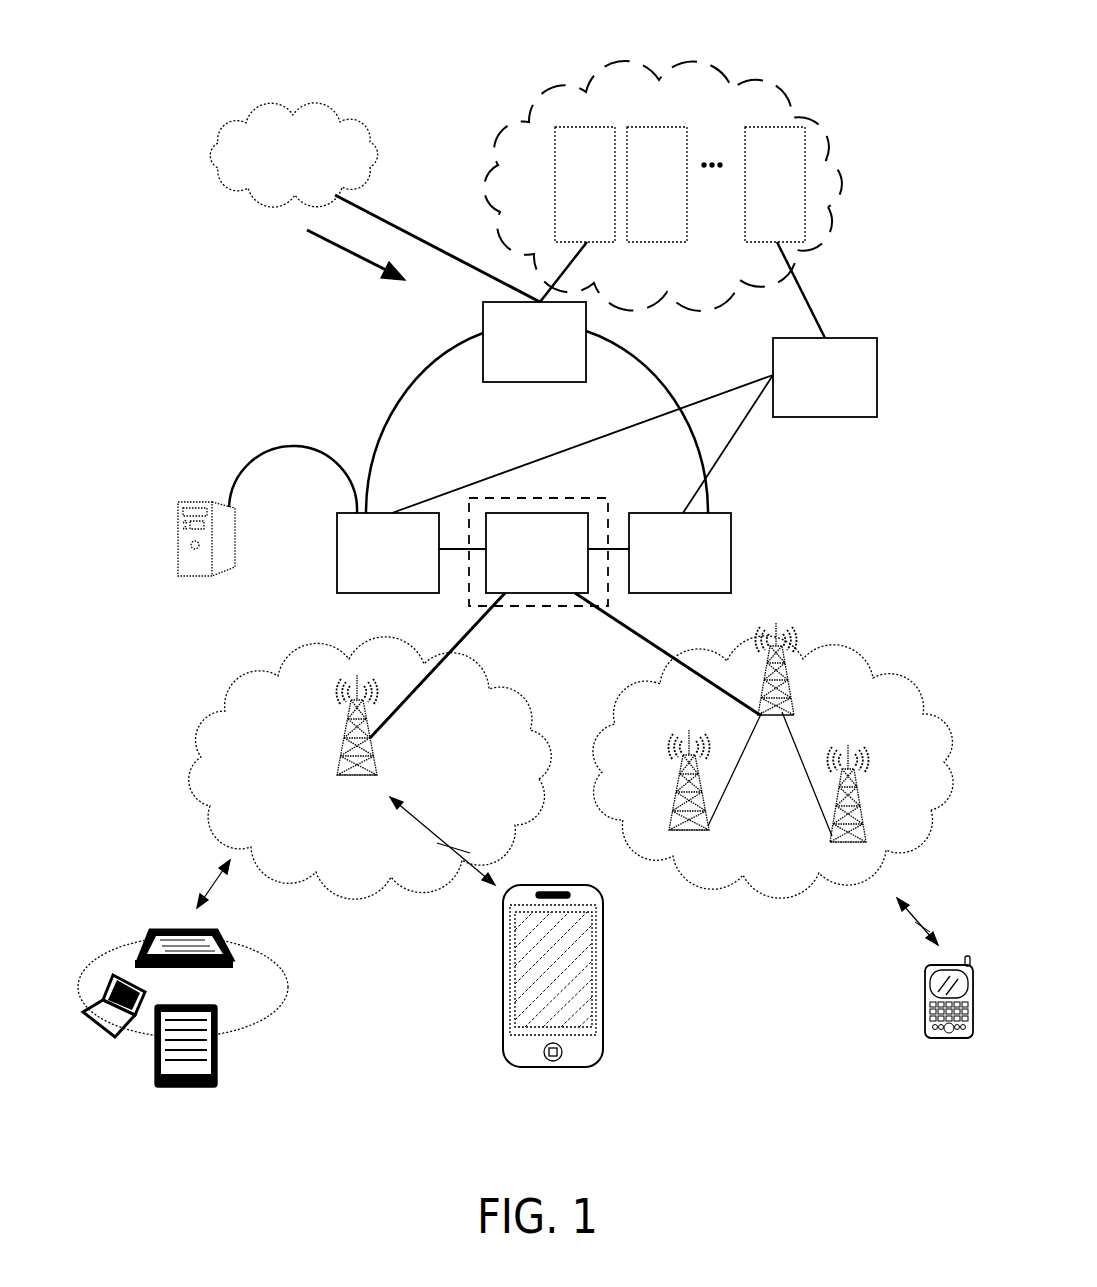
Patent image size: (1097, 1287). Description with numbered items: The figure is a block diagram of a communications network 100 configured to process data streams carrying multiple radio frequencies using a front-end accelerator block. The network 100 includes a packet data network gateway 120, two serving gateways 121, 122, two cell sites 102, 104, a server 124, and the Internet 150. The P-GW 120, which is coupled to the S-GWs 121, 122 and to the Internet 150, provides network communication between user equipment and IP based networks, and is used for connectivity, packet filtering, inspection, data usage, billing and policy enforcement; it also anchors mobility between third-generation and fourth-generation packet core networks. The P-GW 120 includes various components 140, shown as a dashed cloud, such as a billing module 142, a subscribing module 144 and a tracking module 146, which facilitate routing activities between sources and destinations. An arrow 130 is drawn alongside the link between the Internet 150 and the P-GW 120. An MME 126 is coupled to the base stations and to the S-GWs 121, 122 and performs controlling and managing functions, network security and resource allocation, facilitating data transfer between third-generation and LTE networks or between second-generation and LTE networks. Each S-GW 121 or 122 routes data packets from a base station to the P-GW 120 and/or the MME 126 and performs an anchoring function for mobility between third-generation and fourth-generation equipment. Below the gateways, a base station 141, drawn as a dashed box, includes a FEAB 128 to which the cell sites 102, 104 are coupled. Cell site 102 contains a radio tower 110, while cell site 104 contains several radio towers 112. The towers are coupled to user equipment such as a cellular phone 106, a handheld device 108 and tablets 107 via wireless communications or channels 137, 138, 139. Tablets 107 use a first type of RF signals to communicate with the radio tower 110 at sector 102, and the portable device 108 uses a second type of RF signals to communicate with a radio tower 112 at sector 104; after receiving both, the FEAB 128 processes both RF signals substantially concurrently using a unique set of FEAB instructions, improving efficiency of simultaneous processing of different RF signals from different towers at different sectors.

The communications network 100 is at (165, 28).
The cell site 102 is at (513, 690).
The cell site 104 is at (660, 668).
The cellular phone 106 is at (603, 1008).
The tablets 107 is at (276, 1008).
The handheld device 108 is at (925, 968).
The radio tower 110 is at (385, 725).
The radio towers 112 is at (800, 713).
The packet data network gateway 120 is at (513, 373).
The serving gateway 121 is at (366, 585).
The serving gateway 122 is at (658, 585).
The server 124 is at (178, 556).
The mobility management entity 126 is at (803, 408).
The front-end accelerator block 128 is at (515, 585).
The data traffic flow 130 is at (318, 236).
The wireless communications or channels 137 is at (222, 872).
The wireless communications or channels 138 is at (435, 840).
The wireless communications or channels 139 is at (918, 918).
The components 140 is at (580, 80).
The base station 141 is at (573, 498).
The billing module 142 is at (565, 202).
The subscribing module 144 is at (637, 202).
The tracking module 146 is at (755, 202).
The Internet 150 is at (250, 116).